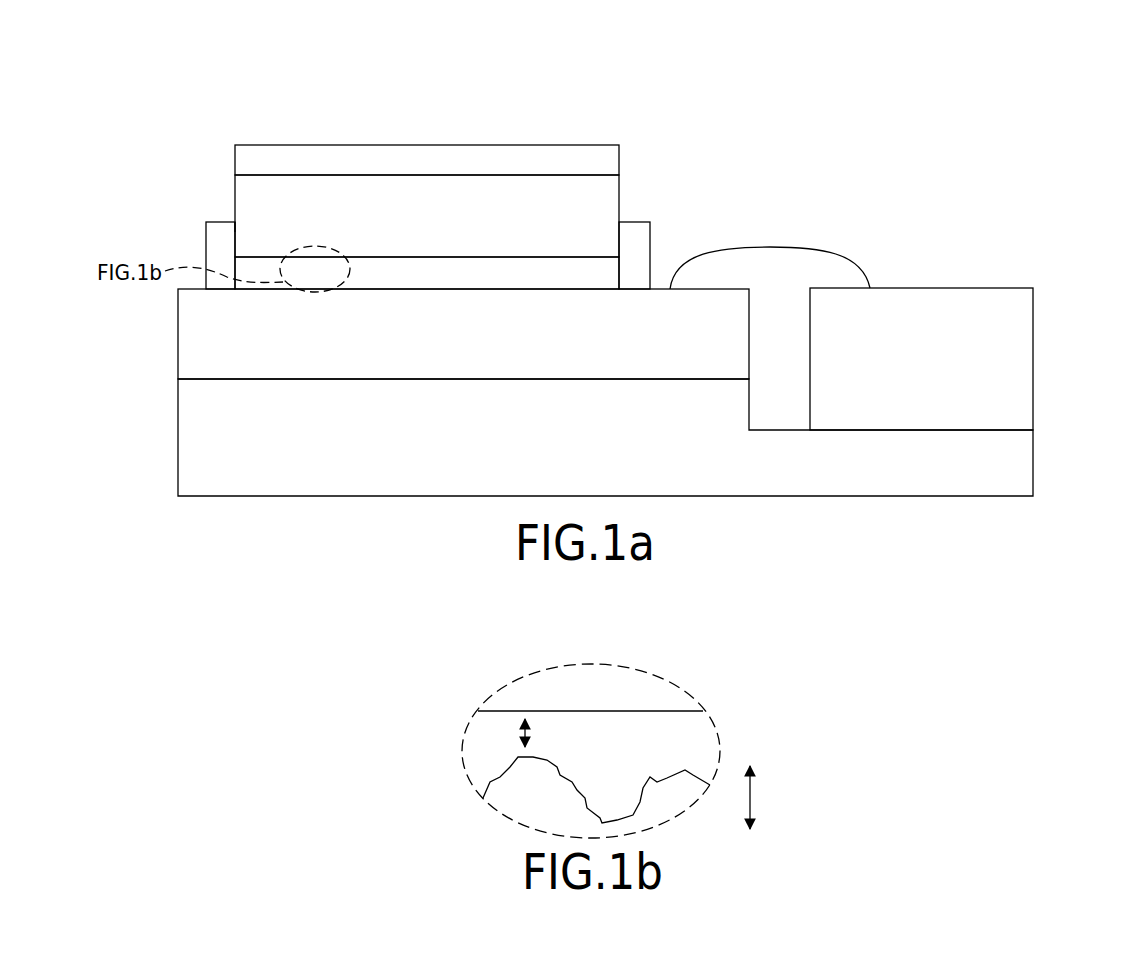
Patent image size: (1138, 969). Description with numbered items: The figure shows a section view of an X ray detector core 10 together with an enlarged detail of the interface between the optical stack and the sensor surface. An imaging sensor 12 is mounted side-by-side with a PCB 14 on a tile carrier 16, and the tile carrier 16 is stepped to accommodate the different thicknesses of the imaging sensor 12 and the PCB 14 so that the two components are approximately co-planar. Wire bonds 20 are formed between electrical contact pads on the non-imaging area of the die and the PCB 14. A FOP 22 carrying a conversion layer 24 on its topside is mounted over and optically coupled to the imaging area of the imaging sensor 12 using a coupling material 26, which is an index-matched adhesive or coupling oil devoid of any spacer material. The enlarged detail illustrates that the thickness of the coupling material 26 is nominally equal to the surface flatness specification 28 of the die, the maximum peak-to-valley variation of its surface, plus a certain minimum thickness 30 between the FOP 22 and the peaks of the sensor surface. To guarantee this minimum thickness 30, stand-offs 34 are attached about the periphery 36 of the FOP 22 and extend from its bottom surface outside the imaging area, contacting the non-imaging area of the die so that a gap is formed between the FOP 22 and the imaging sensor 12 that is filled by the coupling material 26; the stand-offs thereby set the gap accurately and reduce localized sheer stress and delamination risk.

In FIG. 1A, the detector core 10 is at (885, 103).
In FIG. 1A, the imaging sensor 12 is at (178, 335).
In FIG. 1A, the PCB 14 is at (1033, 325).
In FIG. 1A, the tile carrier 16 is at (1033, 476).
In FIG. 1A, the wire bonds 20 is at (822, 253).
In FIG. 1A, the FOP 22 is at (620, 197).
In FIG. 1A, the conversion layer 24 is at (571, 145).
In FIG. 1A, the coupling material 26 is at (593, 273).
In FIG. 1B, the surface flatness specification 28 is at (752, 803).
In FIG. 1B, the certain minimum thickness 30 is at (522, 740).
In FIG. 1A, the stand-offs 34 is at (206, 259).
In FIG. 1A, the periphery 36 is at (235, 232).